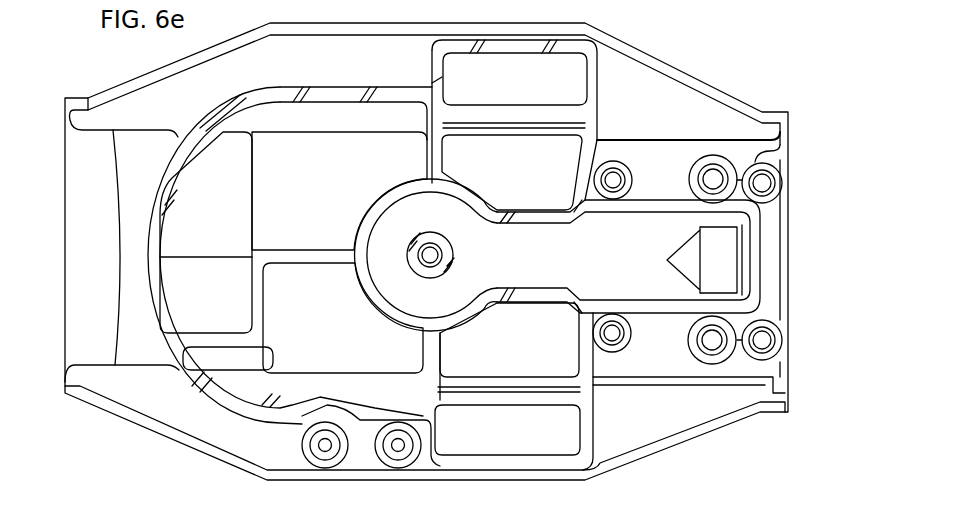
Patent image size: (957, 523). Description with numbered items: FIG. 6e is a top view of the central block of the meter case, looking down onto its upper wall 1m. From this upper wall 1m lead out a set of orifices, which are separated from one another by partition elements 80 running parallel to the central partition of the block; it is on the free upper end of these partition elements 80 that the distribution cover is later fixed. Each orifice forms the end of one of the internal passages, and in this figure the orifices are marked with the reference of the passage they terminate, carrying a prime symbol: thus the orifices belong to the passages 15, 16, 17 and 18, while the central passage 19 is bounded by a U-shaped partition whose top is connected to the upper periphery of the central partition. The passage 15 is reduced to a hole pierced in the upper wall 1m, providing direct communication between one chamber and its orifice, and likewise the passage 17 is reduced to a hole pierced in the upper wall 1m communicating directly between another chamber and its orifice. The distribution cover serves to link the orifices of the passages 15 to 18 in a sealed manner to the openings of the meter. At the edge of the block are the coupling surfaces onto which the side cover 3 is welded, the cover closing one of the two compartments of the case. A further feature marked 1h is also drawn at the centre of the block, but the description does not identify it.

The upper wall 1m is at (142, 393).
The partition elements 80 is at (403, 180).
The passage 18 is at (223, 211).
The passage 16 is at (348, 311).
The passage 15 is at (537, 69).
The passage 17 is at (537, 324).
The central passage 19 is at (396, 269).
The central hole 1h is at (437, 255).
The side cover 3 is at (715, 179).